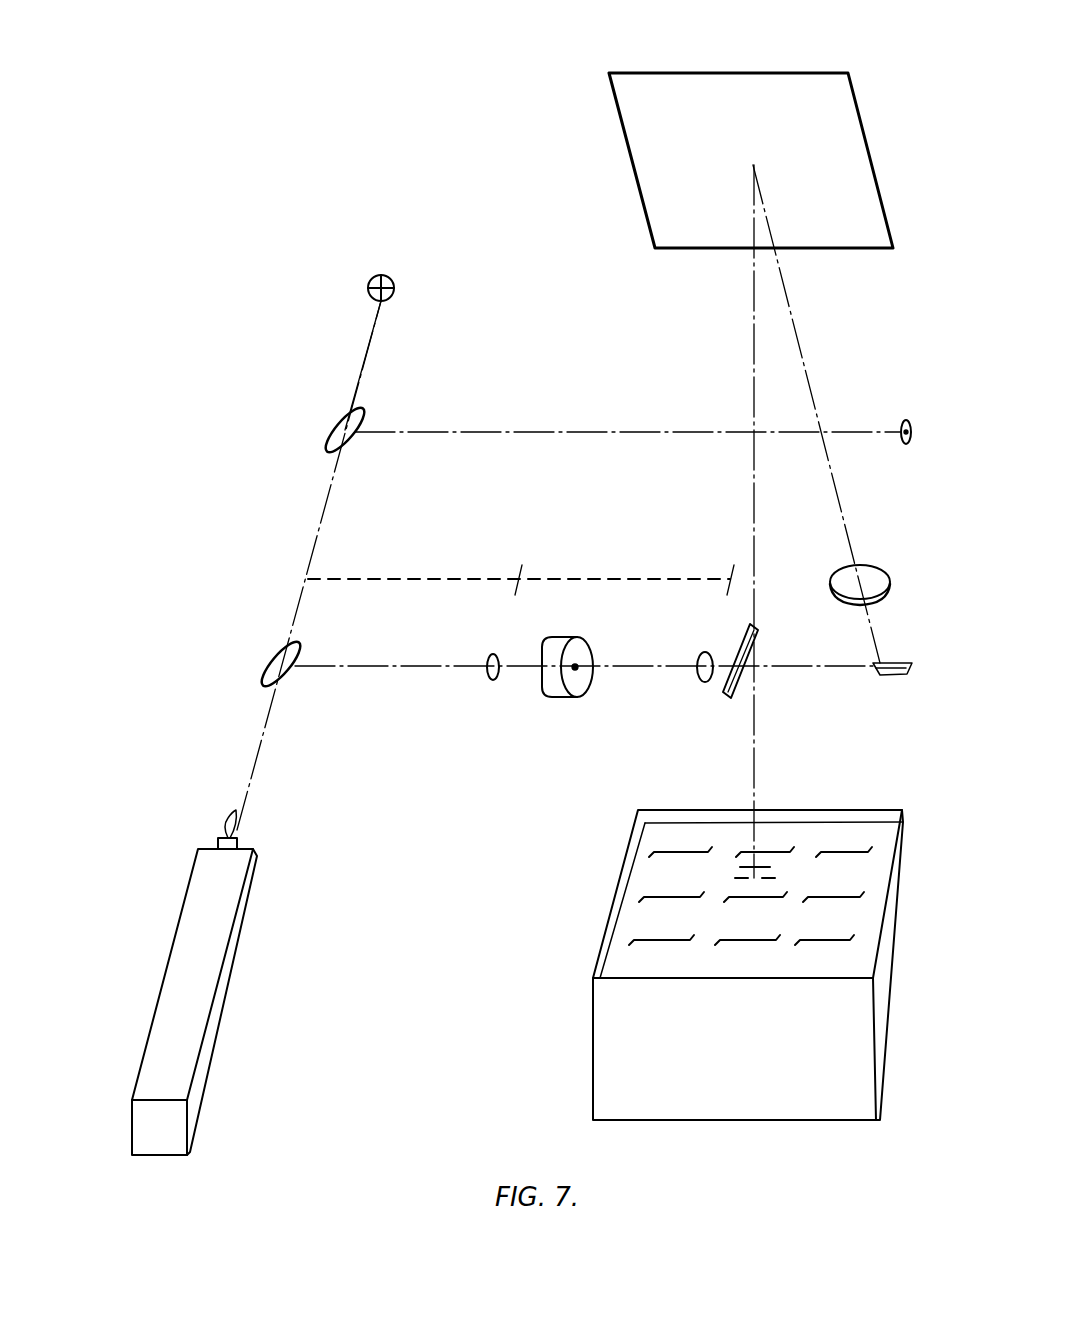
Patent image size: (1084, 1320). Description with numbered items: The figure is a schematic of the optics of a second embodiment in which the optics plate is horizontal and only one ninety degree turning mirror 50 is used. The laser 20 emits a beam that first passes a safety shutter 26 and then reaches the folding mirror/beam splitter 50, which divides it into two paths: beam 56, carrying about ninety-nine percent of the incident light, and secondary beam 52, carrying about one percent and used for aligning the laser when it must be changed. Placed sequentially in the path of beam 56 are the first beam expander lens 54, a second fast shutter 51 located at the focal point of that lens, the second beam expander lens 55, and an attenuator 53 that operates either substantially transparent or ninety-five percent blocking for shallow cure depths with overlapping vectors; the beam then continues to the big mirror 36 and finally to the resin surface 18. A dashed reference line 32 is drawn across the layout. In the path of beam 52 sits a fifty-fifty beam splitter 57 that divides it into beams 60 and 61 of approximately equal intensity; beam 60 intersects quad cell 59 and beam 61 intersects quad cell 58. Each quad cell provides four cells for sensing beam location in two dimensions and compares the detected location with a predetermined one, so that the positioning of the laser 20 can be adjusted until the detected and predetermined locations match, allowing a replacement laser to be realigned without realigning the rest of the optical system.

The resin surface 18 is at (648, 868).
The laser 20 is at (192, 910).
The safety shutter 26 is at (220, 836).
The reference plane 32 is at (522, 568).
The big mirror 36 is at (758, 72).
The turning mirror 50 is at (276, 652).
The second fast shutter 51 is at (580, 682).
The secondary beam 52 is at (332, 468).
The attenuator 53 is at (742, 676).
The first beam expander lens 54 is at (490, 656).
The second beam expander lens 55 is at (706, 684).
The beam 56 is at (878, 568).
The 50/50 beam splitter 57 is at (364, 416).
The quad cell 58 is at (392, 278).
The quad cell 59 is at (903, 421).
The beam 60 is at (606, 431).
The beam 61 is at (374, 327).